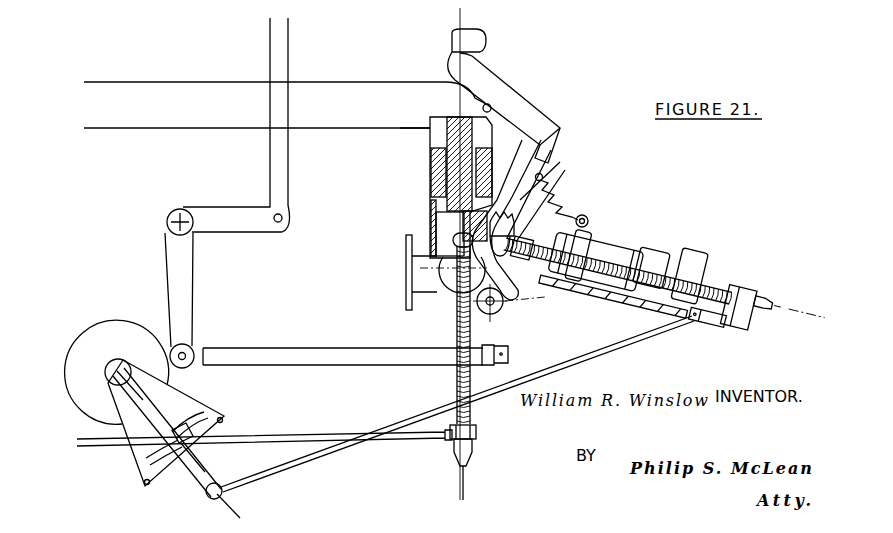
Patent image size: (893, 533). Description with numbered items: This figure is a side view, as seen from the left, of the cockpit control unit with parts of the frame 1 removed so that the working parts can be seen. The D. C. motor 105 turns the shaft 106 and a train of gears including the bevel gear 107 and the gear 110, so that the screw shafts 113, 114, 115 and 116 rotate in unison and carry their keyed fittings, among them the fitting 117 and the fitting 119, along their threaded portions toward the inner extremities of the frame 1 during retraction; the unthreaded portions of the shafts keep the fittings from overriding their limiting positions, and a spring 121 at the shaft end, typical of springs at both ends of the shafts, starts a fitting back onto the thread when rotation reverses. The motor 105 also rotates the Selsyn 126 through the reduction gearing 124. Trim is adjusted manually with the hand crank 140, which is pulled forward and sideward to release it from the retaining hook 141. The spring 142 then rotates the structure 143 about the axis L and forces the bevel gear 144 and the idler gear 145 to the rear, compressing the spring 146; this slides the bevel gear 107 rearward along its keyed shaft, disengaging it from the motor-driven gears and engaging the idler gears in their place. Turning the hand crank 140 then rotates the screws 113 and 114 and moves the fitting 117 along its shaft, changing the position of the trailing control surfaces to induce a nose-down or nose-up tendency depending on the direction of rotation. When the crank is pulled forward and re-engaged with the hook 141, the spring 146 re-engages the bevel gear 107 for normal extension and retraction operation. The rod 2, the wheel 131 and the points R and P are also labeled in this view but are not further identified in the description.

The frame 1 is at (327, 82).
The actuating rod 2 is at (393, 437).
The D. C. motor 105 is at (596, 259).
The shaft 106 is at (584, 214).
The bevel gear 107 is at (522, 212).
The gear 110 is at (553, 128).
The screw shaft 113 is at (738, 307).
The screw shaft 114 is at (789, 309).
The screw shaft 115 is at (471, 404).
The screw shaft 116 is at (500, 432).
The keyed fitting 117 is at (708, 317).
The keyed fitting 119 is at (474, 441).
The spring 121 is at (335, 450).
The reduction gearing 124 is at (652, 268).
The Selsyn 126 is at (689, 276).
The hand wheel 131 is at (105, 323).
The hand crank 140 is at (543, 112).
The retaining hook 141 is at (492, 105).
The spring 142 is at (560, 200).
The structure 143 is at (556, 156).
The bevel gear 144 is at (548, 176).
The idler gear 145 is at (540, 190).
The spring 146 is at (553, 200).
The axis L is at (498, 309).
The axis R is at (468, 477).
The point P is at (776, 306).